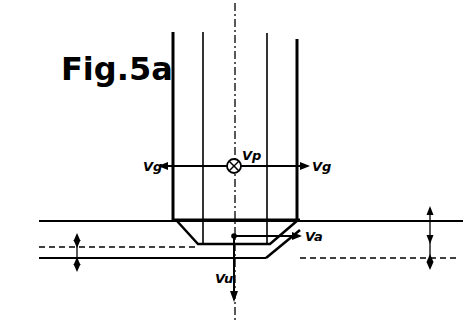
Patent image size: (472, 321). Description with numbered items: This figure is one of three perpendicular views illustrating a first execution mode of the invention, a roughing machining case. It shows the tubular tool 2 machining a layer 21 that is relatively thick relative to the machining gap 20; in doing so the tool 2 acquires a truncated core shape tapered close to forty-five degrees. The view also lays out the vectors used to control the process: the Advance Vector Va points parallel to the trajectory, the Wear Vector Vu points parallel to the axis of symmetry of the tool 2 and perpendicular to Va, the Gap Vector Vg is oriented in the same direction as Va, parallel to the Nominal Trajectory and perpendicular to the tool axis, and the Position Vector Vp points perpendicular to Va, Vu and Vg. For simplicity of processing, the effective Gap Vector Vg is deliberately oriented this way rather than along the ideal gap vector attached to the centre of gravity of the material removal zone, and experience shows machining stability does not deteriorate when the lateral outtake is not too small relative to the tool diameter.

The tool 2 is at (279, 92).
The machining gap 20 is at (87, 250).
The layer 21 is at (422, 237).